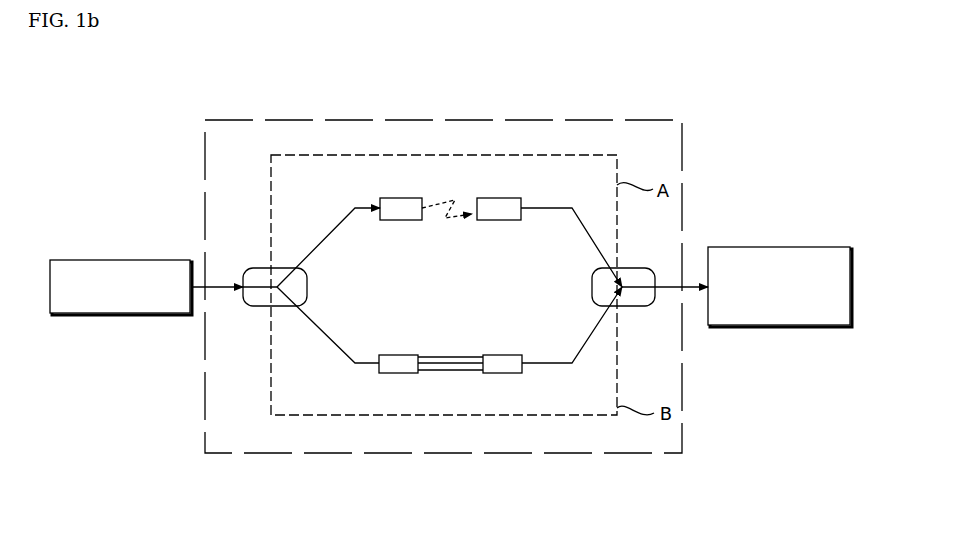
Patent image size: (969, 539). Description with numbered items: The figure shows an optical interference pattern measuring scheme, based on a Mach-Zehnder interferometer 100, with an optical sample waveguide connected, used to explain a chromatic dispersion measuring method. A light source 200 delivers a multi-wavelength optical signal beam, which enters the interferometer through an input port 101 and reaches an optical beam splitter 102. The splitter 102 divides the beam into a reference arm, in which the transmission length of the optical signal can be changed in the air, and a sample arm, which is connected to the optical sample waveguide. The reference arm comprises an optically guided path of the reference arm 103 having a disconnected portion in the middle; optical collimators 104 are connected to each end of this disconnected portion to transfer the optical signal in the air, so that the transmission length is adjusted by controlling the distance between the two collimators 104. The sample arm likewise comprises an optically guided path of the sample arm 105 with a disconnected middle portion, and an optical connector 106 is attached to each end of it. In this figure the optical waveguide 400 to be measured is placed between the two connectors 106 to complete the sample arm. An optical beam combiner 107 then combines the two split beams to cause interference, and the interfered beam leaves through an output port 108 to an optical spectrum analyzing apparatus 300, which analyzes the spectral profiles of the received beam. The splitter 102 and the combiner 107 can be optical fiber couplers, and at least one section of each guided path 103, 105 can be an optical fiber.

The Mach-Zehnder interferometer 100 is at (290, 119).
The input port 101 is at (217, 282).
The optical beam splitter 102 is at (258, 307).
The optically guided path of the reference arm 103 is at (352, 205).
The optical collimators 104 is at (492, 198).
The optically guided path of the sample arm 105 is at (383, 373).
The optical connectors 106 is at (400, 373).
The optical beam combiner 107 is at (617, 309).
The output port 108 is at (668, 282).
The light source 200 is at (80, 259).
The optical spectrum analyzing apparatus 300 is at (808, 247).
The optical waveguide to be measured 400 is at (455, 371).